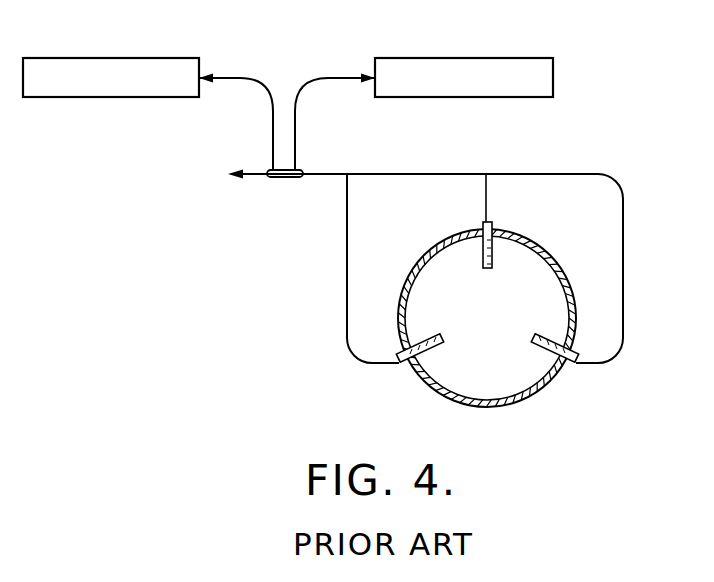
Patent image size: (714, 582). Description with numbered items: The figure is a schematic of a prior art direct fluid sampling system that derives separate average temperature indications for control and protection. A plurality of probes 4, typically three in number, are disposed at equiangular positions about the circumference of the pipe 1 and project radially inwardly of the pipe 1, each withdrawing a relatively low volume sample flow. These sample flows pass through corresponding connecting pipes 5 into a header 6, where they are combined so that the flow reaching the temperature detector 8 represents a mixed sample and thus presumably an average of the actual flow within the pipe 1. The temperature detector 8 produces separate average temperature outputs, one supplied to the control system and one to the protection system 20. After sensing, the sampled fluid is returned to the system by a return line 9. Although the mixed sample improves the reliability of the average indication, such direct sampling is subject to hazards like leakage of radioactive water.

The protection system 20 is at (185, 58).
The temperature detector 8 is at (538, 58).
The header 6 is at (386, 174).
The return line 9 is at (232, 176).
The connecting pipes 5 is at (348, 231).
The pipe 1 is at (542, 247).
The probes 4 is at (483, 247).